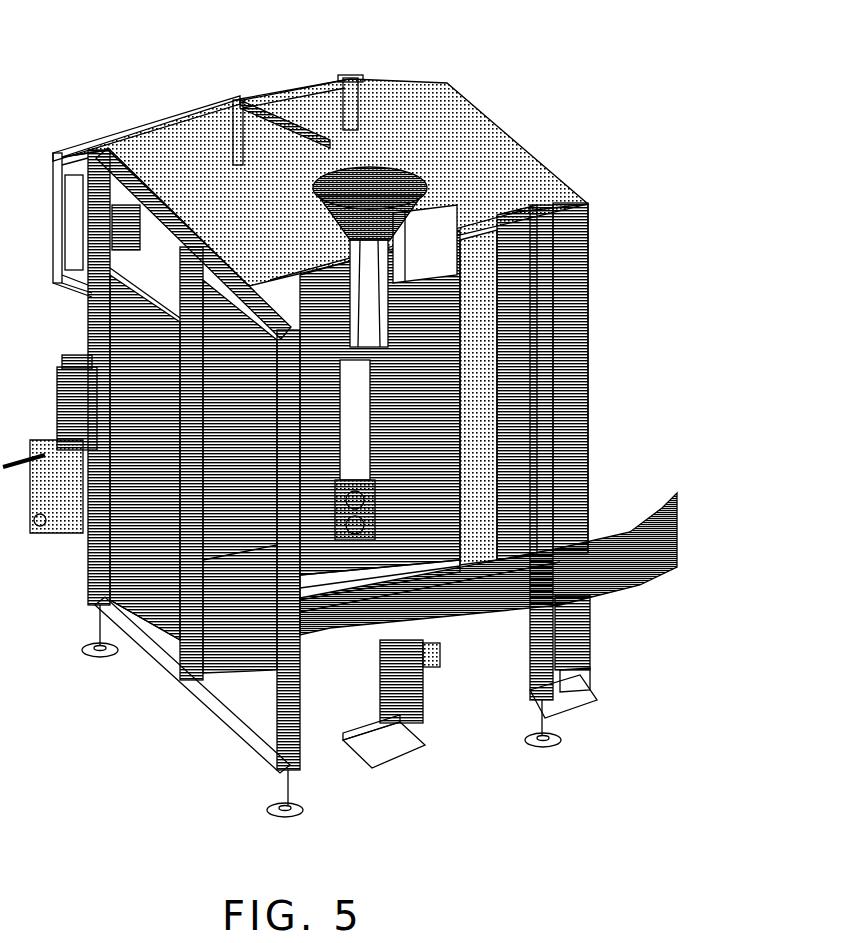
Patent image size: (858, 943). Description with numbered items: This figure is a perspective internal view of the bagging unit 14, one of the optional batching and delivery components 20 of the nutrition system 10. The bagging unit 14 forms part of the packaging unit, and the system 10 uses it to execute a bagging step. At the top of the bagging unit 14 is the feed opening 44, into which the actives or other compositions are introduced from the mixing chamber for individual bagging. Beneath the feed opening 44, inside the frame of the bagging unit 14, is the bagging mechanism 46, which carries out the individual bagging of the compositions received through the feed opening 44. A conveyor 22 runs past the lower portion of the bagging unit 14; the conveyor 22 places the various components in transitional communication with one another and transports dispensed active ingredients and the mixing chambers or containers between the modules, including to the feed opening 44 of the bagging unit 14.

The nutrition system 10 is at (427, 416).
The batching and delivery components 20 is at (398, 419).
The bagging unit 14 is at (470, 110).
The feed opening 44 is at (423, 170).
The bagging mechanism 46 is at (445, 450).
The conveyor 22 is at (657, 505).